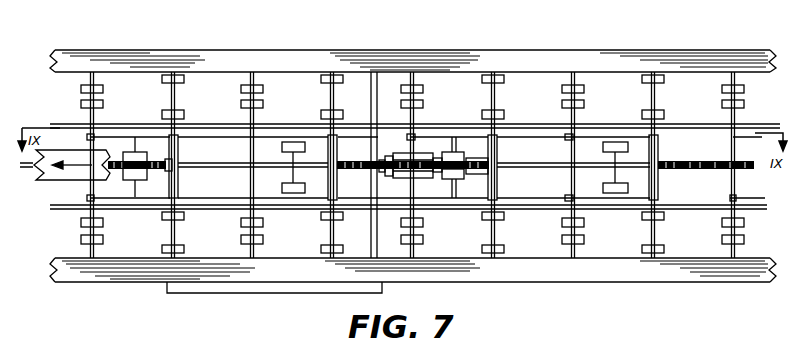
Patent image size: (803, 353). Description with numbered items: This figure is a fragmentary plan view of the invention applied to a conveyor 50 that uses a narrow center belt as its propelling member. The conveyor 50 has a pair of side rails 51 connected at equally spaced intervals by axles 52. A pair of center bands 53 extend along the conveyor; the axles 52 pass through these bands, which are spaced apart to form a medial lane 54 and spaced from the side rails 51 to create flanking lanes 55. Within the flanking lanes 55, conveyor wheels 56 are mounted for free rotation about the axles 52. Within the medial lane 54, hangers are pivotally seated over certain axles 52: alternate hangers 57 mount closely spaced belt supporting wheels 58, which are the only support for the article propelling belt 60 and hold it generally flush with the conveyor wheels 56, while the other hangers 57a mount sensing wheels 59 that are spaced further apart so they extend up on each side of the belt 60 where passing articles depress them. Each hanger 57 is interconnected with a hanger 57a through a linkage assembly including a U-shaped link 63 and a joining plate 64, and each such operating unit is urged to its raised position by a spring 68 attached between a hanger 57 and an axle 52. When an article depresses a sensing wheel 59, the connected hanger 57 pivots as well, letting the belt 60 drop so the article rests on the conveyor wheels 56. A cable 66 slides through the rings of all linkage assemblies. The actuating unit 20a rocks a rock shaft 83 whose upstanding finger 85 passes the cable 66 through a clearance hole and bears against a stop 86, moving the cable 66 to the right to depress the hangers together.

The actuating unit 20a is at (254, 295).
The conveyor 50 is at (601, 46).
The side rails 51 is at (724, 33).
The axles 52 is at (100, 77).
The center bands 53 is at (719, 128).
The medial lane 54 is at (546, 200).
The flanking lanes 55 is at (619, 88).
The conveyor wheels 56 is at (176, 75).
The hangers 57 is at (498, 147).
The hangers 57a is at (660, 190).
The belt supporting wheels 58 is at (455, 152).
The sensing wheels 59 is at (291, 141).
The article propelling belt 60 is at (53, 176).
The U-shaped link 63 is at (480, 176).
The plate 64 is at (427, 178).
The cable 66 is at (549, 168).
The spring 68 is at (341, 162).
The rock shaft 83 is at (373, 226).
The finger 85 is at (382, 172).
The stop 86 is at (407, 137).